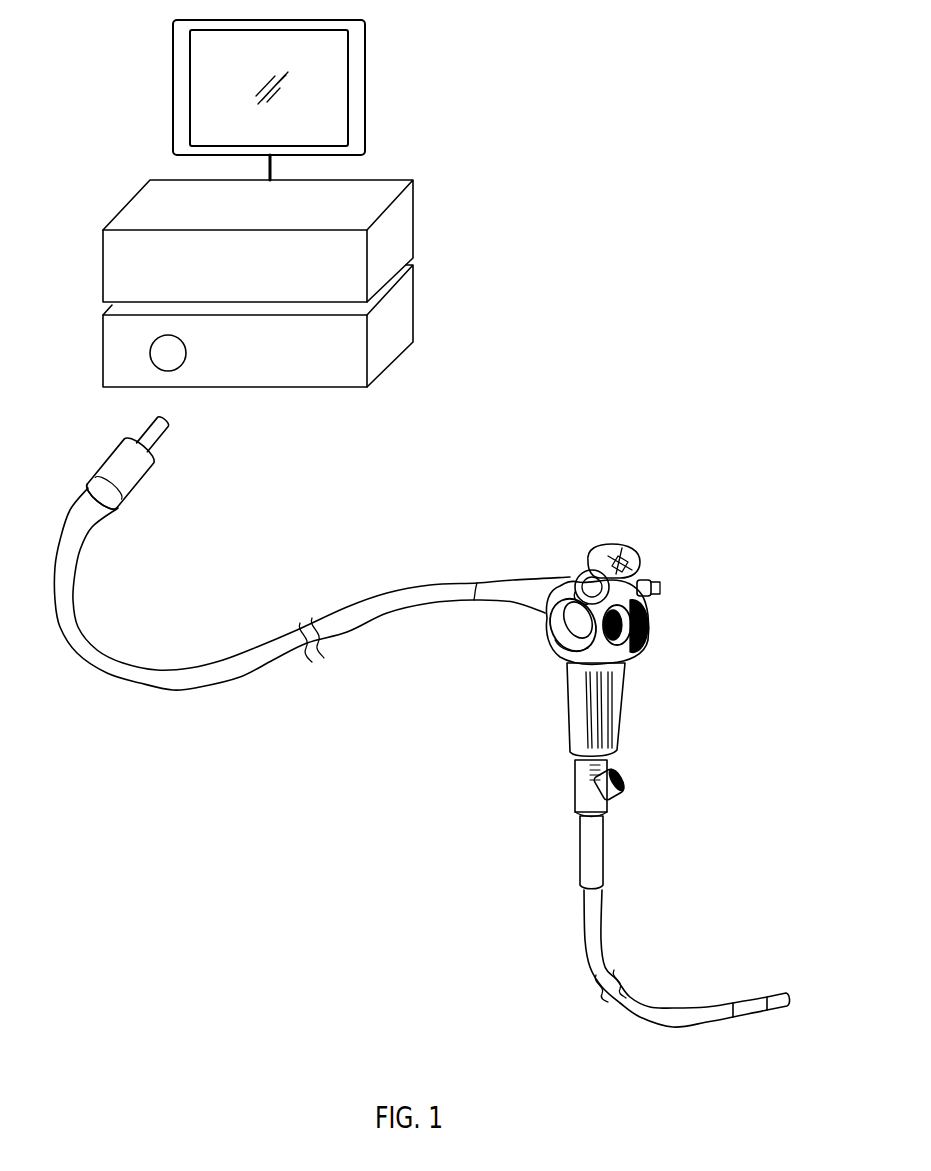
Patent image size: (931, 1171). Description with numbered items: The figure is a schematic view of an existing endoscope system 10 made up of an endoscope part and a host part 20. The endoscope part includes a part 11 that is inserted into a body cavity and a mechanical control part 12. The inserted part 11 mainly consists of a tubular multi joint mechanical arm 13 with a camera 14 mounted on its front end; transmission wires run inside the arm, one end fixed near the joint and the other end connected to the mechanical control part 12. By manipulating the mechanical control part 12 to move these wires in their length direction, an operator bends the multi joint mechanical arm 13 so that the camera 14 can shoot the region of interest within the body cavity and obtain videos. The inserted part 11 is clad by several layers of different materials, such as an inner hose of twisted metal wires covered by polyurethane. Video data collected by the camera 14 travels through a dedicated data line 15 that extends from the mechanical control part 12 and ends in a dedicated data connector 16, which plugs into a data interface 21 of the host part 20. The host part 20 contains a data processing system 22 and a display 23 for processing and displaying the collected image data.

The endoscope 10 is at (540, 523).
The part inserted into the body cavity 11 is at (598, 921).
The mechanical control part 12 is at (650, 628).
The tubular multi joint mechanical arm 13 is at (750, 998).
The camera 14 is at (777, 1004).
The dedicated data line 15 is at (196, 686).
The dedicated data connector 16 is at (98, 516).
The host part 20 is at (440, 190).
The data interface 21 is at (150, 351).
The data processing system 22 is at (412, 292).
The display 23 is at (366, 88).